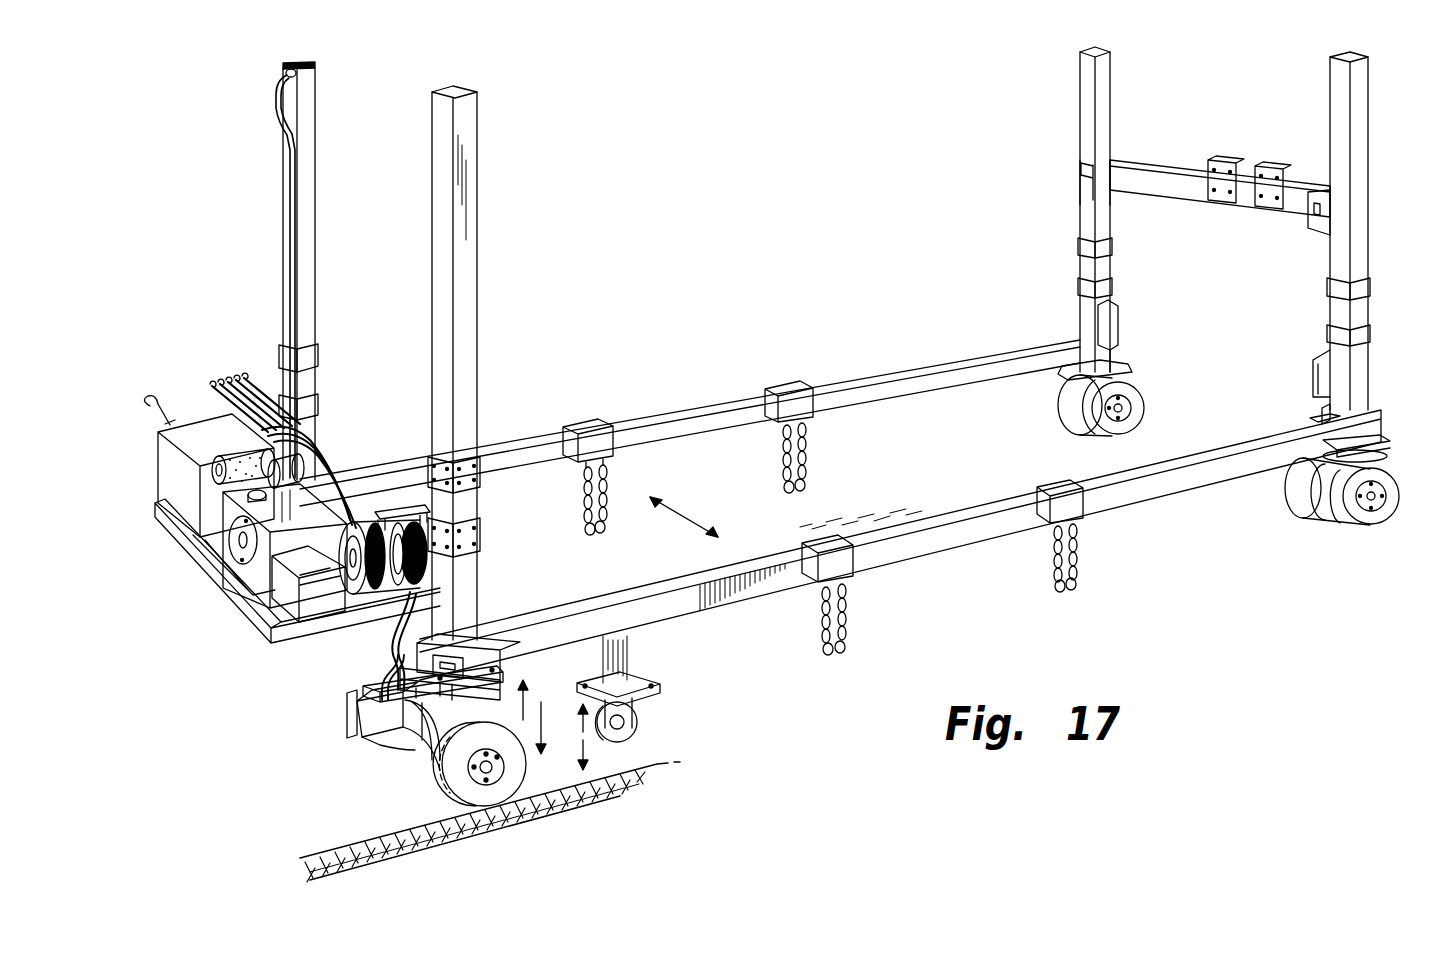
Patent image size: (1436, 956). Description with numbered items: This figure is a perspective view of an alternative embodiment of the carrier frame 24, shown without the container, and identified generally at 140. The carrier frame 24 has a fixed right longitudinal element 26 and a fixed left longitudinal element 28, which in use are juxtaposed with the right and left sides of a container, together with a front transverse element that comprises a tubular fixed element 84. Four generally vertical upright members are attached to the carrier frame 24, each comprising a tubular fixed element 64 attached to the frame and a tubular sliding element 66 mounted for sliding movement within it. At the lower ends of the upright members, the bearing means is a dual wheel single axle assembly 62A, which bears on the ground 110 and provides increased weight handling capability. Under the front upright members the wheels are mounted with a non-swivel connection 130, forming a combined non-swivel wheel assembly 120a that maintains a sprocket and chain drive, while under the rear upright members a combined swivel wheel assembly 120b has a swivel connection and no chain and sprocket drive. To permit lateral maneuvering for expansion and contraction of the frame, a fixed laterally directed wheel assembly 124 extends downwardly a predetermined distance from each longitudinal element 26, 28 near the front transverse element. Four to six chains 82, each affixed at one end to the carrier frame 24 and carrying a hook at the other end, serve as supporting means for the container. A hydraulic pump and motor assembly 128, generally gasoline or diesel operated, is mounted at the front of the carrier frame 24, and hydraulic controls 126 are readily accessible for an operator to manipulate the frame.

The power base frame assembly 140 is at (817, 219).
The hydraulic controls 126 is at (233, 380).
The tubular fixed element 64 is at (478, 374).
The right longitudinal element 26 is at (690, 410).
The tubular fixed element 84 is at (1125, 365).
The tubular sliding element 66 is at (478, 595).
The left longitudinal element 28 is at (893, 525).
The carrier frame 24 is at (718, 567).
The non-swivel connection 130 is at (500, 683).
The chains 82 is at (845, 608).
The fixed laterally directed wheel assembly 124 is at (656, 637).
The hydraulic pump and motor assembly 128 is at (255, 653).
The combined non-swivel wheel assembly 120a is at (418, 748).
The dual wheel single axle assembly 62A is at (1338, 515).
The ground 110 is at (640, 790).
The combined swivel wheel assembly 120b is at (1375, 528).